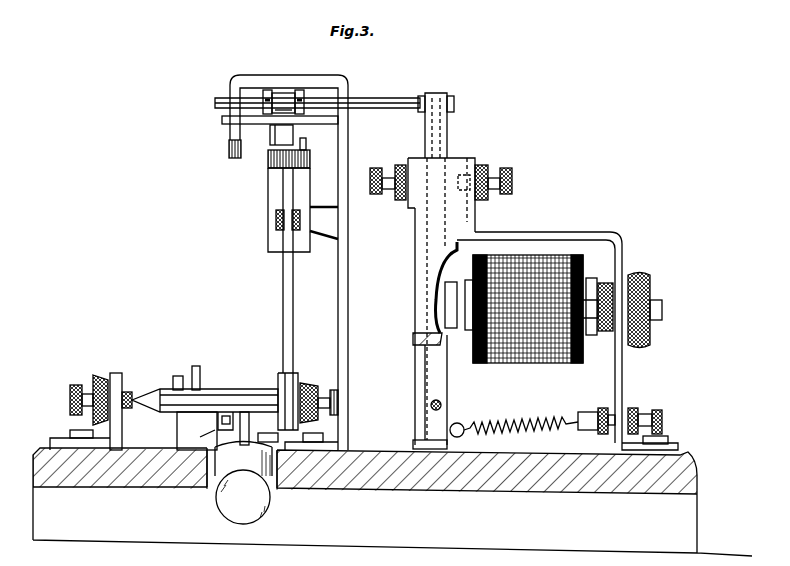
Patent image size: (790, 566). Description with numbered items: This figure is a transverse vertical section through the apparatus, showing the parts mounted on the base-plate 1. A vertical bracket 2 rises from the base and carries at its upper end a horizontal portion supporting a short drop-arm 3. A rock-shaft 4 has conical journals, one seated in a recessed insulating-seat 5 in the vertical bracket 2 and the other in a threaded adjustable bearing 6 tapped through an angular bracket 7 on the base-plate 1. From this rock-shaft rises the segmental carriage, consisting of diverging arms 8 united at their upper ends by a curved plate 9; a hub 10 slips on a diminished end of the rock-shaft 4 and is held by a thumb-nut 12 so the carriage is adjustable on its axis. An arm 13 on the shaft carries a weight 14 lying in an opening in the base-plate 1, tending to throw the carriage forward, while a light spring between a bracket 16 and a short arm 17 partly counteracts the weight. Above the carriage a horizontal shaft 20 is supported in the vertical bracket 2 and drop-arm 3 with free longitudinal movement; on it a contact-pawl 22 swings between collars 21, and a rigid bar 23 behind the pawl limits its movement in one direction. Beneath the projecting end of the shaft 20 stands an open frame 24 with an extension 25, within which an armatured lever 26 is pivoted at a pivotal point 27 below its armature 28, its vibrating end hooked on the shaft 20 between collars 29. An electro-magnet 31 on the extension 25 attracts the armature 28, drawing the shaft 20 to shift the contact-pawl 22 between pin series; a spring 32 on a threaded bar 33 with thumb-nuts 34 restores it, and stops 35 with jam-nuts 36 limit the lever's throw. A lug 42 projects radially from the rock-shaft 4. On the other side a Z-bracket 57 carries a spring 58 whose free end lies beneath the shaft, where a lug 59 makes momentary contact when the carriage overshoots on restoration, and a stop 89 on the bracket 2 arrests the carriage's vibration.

The base-plate 1 is at (392, 498).
The vertical bracket 2 is at (294, 262).
The drop-arm 3 is at (229, 148).
The rock-shaft 4 is at (233, 389).
The recessed insulating-seat 5 is at (333, 390).
The threaded adjustable bearing 6 is at (127, 392).
The angular bracket 7 is at (122, 412).
The diverging arms 8 is at (293, 310).
The curved plate 9 is at (268, 187).
The hub 10 is at (280, 373).
The thumb-nut 12 is at (308, 383).
The arm 13 is at (243, 459).
The weight 14 is at (243, 497).
The bracket 16 is at (197, 428).
The short arm 17 is at (196, 366).
The horizontal shaft 20 is at (383, 104).
The collars 21 is at (268, 90).
The contact-pawl 22 is at (284, 93).
The rigid bar 23 is at (306, 132).
The open frame 24 is at (441, 299).
The extension 25 is at (567, 331).
The armatured lever 26 is at (430, 328).
The pivotal point 27 is at (431, 406).
The armature 28 is at (452, 283).
The collars 29 is at (448, 95).
The electro-magnet 31 is at (563, 320).
The spring 32 is at (518, 424).
The threaded bar 33 is at (590, 414).
The thumb-nuts 34 is at (632, 408).
The stops 35 is at (442, 180).
The jam-nuts 36 is at (400, 166).
The arm or lug 42 is at (176, 378).
The Z-bracket 57 is at (289, 431).
The spring 58 is at (227, 427).
The lug or arm 59 is at (198, 435).
The stop 89 is at (276, 222).